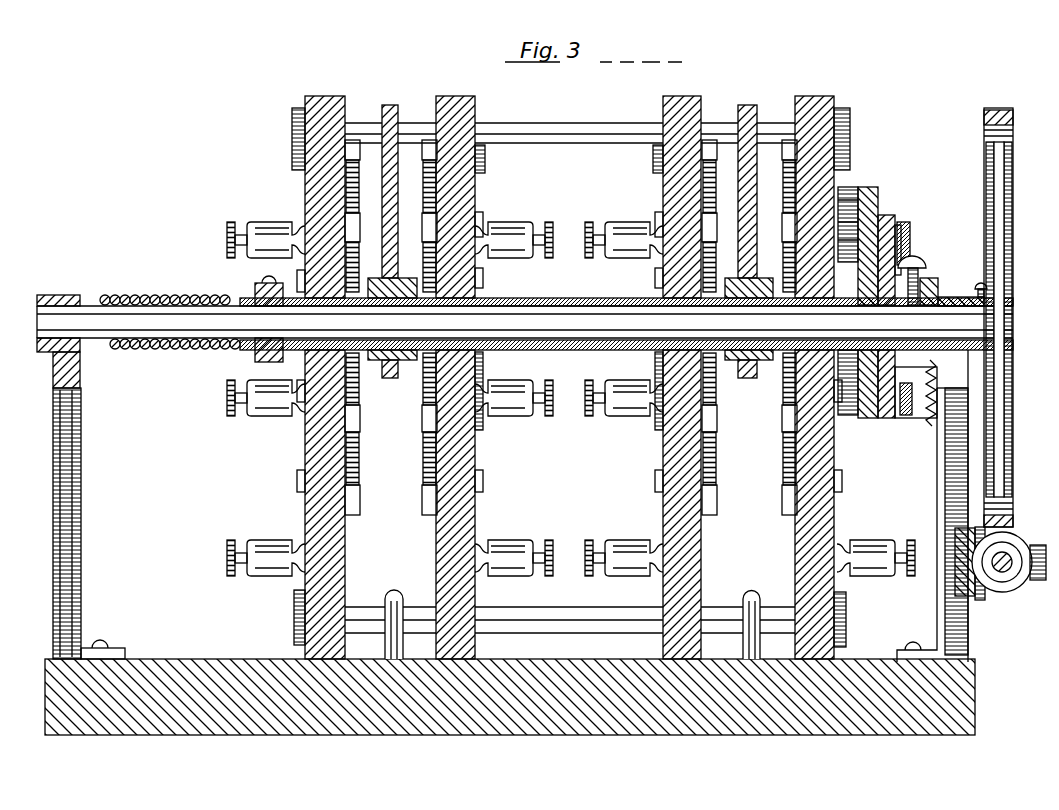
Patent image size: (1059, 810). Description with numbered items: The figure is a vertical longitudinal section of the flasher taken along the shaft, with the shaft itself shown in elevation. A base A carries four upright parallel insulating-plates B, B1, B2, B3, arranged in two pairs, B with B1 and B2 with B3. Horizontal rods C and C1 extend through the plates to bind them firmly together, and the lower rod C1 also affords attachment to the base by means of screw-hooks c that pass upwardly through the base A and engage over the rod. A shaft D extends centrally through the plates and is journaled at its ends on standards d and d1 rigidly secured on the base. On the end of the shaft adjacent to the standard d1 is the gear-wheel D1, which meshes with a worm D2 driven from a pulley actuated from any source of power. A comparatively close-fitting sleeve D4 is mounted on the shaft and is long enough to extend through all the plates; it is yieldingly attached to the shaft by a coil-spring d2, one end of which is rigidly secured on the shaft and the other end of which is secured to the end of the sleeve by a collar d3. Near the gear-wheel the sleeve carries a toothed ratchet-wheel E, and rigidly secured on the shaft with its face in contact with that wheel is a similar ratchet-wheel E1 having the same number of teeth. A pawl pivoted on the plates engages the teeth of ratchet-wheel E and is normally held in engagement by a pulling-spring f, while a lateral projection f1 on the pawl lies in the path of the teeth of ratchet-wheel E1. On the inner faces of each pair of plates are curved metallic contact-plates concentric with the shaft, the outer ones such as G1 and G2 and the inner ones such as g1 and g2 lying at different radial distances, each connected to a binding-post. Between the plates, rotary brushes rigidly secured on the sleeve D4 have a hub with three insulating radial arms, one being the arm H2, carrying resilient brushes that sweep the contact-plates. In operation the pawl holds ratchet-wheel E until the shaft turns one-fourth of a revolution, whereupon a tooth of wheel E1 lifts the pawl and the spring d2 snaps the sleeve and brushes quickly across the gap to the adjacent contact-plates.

The base A is at (152, 728).
The insulating-plate B is at (824, 88).
The insulating-plate B1 is at (689, 88).
The insulating-plate B2 is at (447, 97).
The insulating-plate B3 is at (330, 85).
The radial arm H2 is at (397, 104).
The rod C is at (525, 123).
The rod C1 is at (552, 621).
The screw-hook c is at (393, 592).
The shaft D is at (88, 322).
The gear-wheel D1 is at (1013, 194).
The worm D2 is at (1013, 588).
The sleeve D4 is at (563, 288).
The standard d is at (75, 484).
The standard d1 is at (941, 493).
The spring d2 is at (163, 279).
The collar d3 is at (254, 359).
The ratchet-wheel E is at (866, 420).
The ratchet-wheel E1 is at (880, 200).
The pulling-spring f is at (935, 375).
The projection f1 is at (890, 226).
The outer contact-plate G1 is at (350, 152).
The outer contact-plate G2 is at (430, 493).
The inner contact-plate g1 is at (340, 216).
The inner contact-plate g2 is at (432, 411).